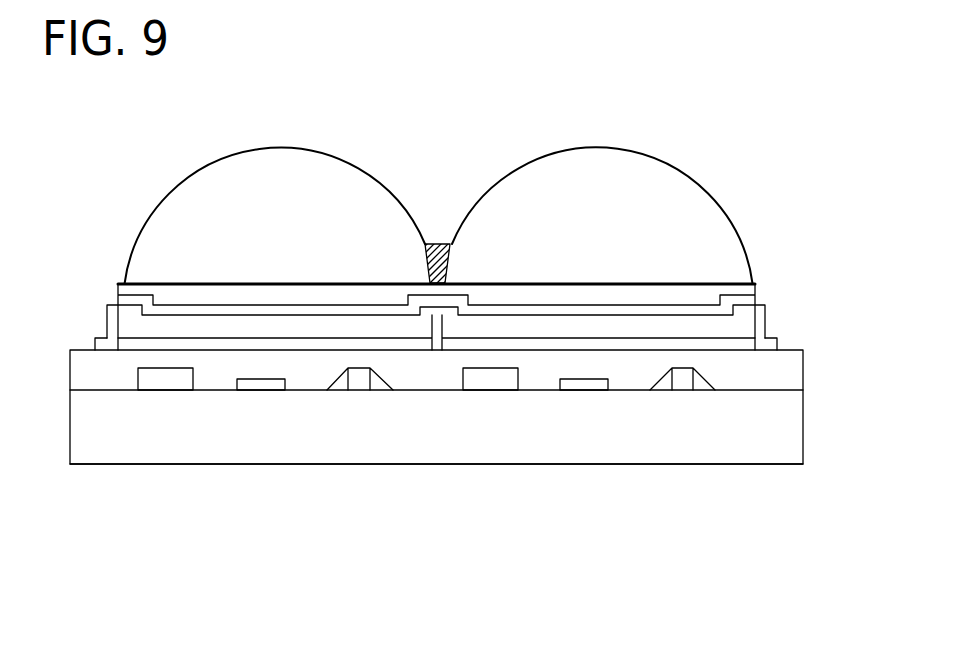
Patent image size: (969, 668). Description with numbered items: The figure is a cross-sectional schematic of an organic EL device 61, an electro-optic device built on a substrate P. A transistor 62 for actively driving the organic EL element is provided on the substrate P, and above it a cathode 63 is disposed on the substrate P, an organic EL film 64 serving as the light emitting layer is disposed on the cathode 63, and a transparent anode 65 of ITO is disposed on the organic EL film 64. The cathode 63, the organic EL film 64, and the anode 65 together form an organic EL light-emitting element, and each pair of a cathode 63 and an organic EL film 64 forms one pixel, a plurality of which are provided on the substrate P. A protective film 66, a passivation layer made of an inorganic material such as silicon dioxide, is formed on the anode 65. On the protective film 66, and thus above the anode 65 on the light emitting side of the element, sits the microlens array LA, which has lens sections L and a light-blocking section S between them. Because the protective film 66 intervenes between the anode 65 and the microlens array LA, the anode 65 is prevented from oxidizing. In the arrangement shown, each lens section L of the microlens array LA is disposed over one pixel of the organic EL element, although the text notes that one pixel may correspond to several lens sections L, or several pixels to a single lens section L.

The organic EL device 61 is at (815, 465).
The transistor 62 is at (704, 382).
The cathode 63 is at (750, 324).
The organic EL film 64 is at (752, 309).
The transparent anode 65 is at (750, 300).
The protective film 66 is at (750, 283).
The lens section L is at (290, 147).
The microlens array LA is at (439, 160).
The light-blocking section S is at (435, 243).
The substrate P is at (802, 418).